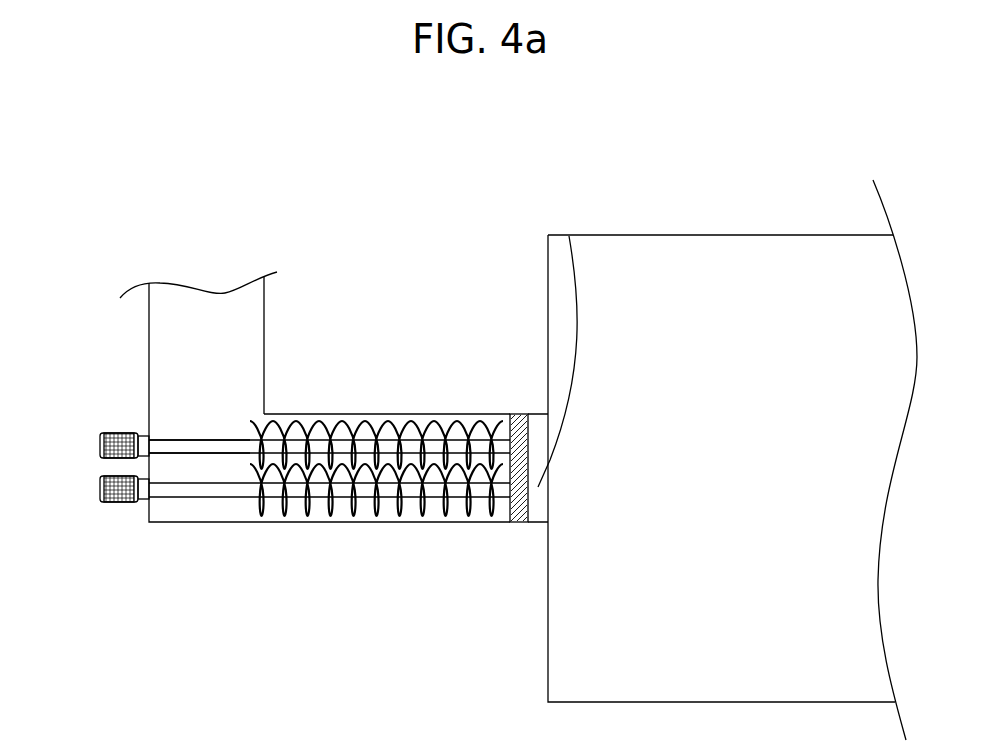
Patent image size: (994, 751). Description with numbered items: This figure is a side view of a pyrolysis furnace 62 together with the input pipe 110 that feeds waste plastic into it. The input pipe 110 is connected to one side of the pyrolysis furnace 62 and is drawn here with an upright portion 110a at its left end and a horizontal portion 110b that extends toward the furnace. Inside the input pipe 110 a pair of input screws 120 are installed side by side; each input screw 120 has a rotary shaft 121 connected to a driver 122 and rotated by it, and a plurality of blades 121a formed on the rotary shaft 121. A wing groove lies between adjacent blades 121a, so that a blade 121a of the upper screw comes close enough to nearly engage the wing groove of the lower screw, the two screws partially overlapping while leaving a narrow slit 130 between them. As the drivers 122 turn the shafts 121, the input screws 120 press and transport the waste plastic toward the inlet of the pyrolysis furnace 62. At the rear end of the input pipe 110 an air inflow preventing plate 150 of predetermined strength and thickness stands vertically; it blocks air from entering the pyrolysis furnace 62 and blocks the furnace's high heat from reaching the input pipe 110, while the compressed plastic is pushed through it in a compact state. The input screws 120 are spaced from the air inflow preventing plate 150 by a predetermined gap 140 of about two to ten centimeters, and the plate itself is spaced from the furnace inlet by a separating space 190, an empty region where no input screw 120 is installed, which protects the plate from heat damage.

The pyrolysis furnace 62 is at (697, 224).
The separating space 190 is at (569, 236).
The input pipe 110 is at (147, 560).
The first housing part 110a is at (148, 330).
The second housing part 110b is at (437, 522).
The input screws 120 is at (398, 404).
The rotary shaft 121 is at (197, 438).
The blades 121a is at (322, 427).
The driver 122 is at (98, 492).
The slit 130 is at (343, 463).
The predetermined gap 140 is at (519, 523).
The air inflow preventing plate 150 is at (514, 402).